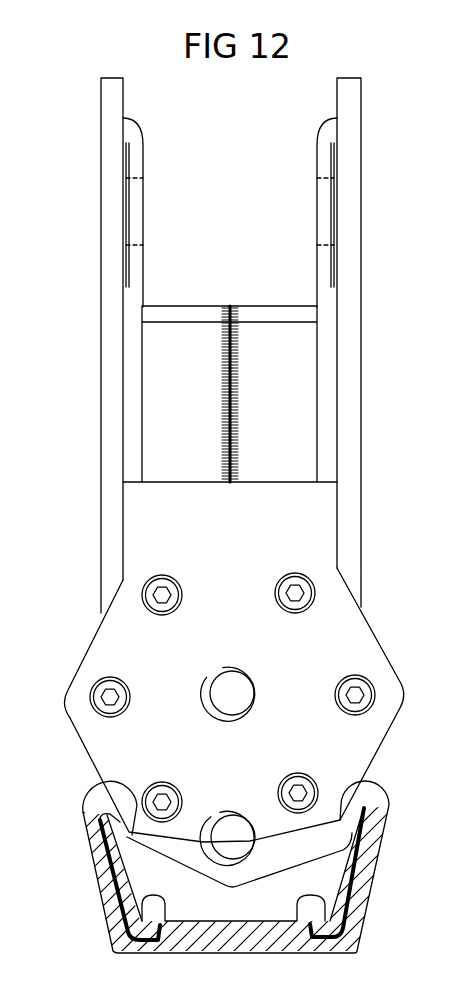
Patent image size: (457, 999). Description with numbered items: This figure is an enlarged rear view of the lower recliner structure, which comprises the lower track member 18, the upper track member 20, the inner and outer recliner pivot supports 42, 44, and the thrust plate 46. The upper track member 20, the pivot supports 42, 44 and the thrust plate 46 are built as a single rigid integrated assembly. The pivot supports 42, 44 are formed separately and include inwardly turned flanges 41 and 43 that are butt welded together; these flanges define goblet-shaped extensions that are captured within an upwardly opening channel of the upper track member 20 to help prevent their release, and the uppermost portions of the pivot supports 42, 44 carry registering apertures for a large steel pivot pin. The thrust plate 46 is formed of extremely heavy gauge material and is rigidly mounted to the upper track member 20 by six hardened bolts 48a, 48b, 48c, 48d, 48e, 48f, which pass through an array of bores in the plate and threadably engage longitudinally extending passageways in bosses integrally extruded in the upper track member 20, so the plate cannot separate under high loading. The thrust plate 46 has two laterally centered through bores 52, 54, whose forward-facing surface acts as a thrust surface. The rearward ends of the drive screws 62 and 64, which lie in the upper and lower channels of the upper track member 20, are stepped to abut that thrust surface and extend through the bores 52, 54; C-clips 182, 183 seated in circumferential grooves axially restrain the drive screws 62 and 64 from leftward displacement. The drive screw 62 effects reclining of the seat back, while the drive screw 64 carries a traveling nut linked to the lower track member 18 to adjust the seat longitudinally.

The lower track member 18 is at (357, 897).
The upper track member 20 is at (343, 851).
The inwardly turned flange 41 is at (290, 419).
The inner recliner pivot support 42 is at (347, 400).
The inwardly turned flange 43 is at (197, 419).
The outer recliner pivot support 44 is at (105, 360).
The thrust plate 46 is at (360, 652).
The hardened bolt 48a is at (90, 787).
The hardened bolt 48b is at (90, 708).
The hardened bolt 48c is at (143, 605).
The hardened bolt 48d is at (312, 580).
The hardened bolt 48e is at (336, 707).
The hardened bolt 48f is at (333, 767).
The through bore 52 is at (320, 179).
The through bore 54 is at (128, 180).
The drive screw 62 is at (242, 699).
The drive screw 64 is at (237, 833).
The C-clip 182 is at (243, 667).
The C-clip 183 is at (132, 826).